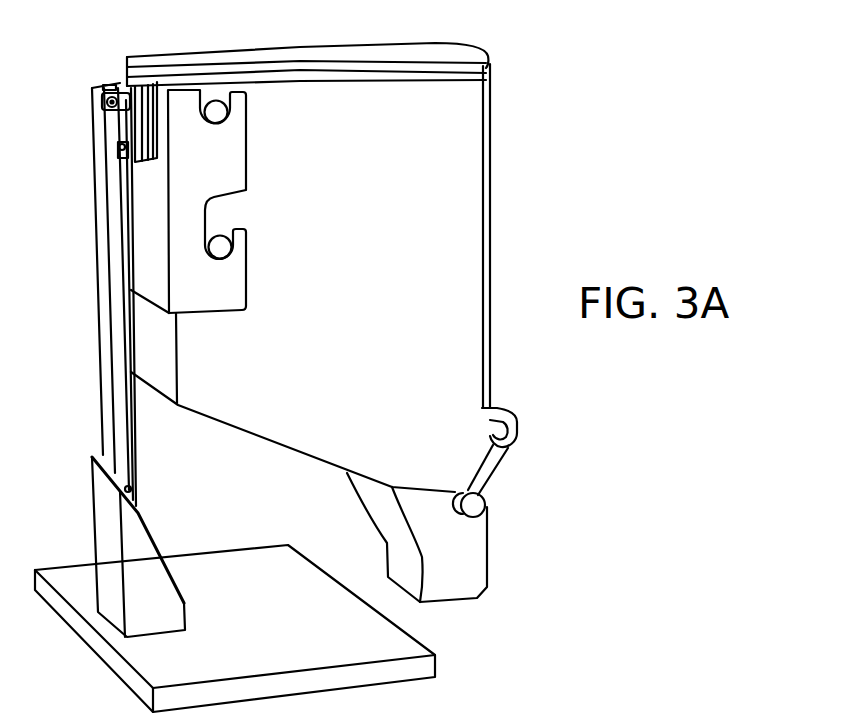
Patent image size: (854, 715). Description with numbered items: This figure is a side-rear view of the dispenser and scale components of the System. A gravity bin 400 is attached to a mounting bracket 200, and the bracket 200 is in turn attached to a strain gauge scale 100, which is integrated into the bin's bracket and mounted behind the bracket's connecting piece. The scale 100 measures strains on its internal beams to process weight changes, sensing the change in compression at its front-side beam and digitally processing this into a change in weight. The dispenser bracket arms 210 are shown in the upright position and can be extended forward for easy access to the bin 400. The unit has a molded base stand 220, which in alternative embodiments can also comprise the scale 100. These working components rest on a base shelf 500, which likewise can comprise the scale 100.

The strain gauge scale 100 is at (147, 130).
The mounting bracket 200 is at (244, 128).
The dispenser bracket arms 210 is at (108, 348).
The molded base stand 220 is at (112, 580).
The gravity bin 400 is at (530, 161).
The base shelf 500 is at (297, 641).